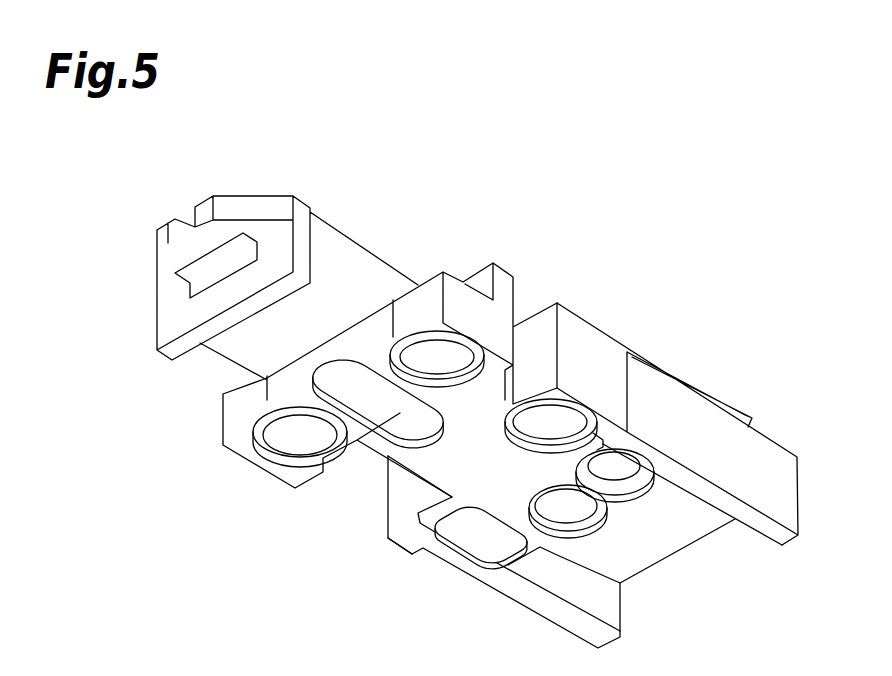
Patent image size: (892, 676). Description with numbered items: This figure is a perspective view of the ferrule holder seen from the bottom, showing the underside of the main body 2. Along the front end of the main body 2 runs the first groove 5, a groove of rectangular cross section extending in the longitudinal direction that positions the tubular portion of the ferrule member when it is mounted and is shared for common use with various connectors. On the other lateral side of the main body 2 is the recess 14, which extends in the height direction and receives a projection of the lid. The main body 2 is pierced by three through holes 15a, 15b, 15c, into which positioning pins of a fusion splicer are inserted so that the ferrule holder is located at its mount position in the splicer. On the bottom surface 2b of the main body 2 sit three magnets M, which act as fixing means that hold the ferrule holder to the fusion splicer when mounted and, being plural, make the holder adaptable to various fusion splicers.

The main body 2 is at (616, 333).
The bottom surface 2b is at (415, 455).
The first groove 5 is at (171, 230).
The recess 14 is at (543, 347).
The through hole 15a is at (480, 545).
The through hole 15b is at (580, 512).
The through hole 15c is at (633, 480).
The magnet M is at (438, 362).